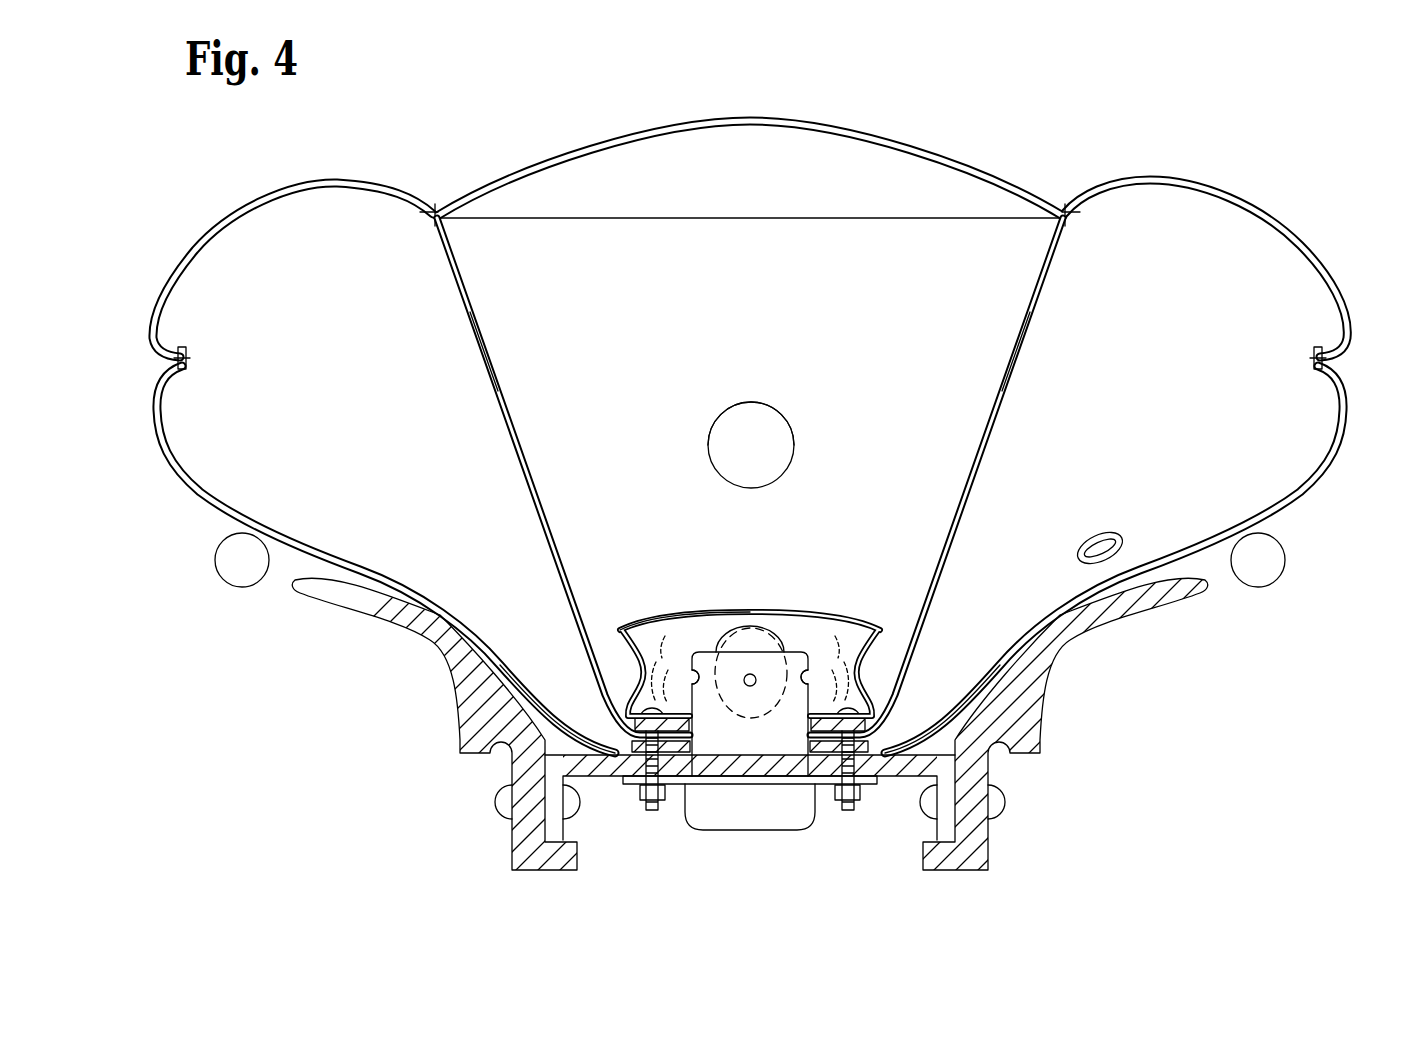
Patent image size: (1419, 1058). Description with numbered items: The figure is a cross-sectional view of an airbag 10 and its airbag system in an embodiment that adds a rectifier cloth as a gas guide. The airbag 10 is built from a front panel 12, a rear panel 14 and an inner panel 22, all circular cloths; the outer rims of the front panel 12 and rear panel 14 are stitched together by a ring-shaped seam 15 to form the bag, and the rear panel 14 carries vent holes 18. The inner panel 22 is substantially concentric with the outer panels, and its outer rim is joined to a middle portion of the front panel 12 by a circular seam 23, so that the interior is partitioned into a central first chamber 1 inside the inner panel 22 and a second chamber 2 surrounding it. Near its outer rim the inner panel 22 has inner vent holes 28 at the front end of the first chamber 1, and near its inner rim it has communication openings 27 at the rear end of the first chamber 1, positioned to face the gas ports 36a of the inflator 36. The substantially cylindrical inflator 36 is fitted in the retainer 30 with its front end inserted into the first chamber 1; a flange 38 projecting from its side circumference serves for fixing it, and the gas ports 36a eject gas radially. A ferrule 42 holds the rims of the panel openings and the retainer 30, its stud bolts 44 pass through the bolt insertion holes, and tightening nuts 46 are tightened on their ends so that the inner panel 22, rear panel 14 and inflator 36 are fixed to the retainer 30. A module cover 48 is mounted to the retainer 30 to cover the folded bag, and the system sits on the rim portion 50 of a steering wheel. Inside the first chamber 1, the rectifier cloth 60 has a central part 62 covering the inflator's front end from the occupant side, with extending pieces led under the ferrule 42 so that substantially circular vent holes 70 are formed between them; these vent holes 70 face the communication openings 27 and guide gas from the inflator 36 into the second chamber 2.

The first chamber 1 is at (556, 380).
The second chamber 2 is at (283, 395).
The airbag 10 is at (1229, 149).
The front panel 12 is at (1297, 226).
The rear panel 14 is at (1327, 463).
The seam 15 is at (183, 368).
The vent holes 18 is at (1120, 532).
The inner panel 22 is at (486, 347).
The seam 23 is at (429, 235).
The communication openings 27 is at (585, 685).
The inner vent holes 28 is at (738, 410).
The retainer 30 is at (985, 758).
The inflator 36 is at (765, 820).
The gas ports 36a is at (681, 686).
The flange 38 is at (703, 786).
The ferrule 42 is at (888, 710).
The stud bolts 44 is at (652, 812).
The tightening nuts 46 is at (640, 795).
The module cover 48 is at (347, 612).
The rim portion 50 is at (250, 587).
The rectifier cloth 60 is at (861, 600).
The central part 62 is at (702, 630).
The vent holes 70 is at (624, 658).